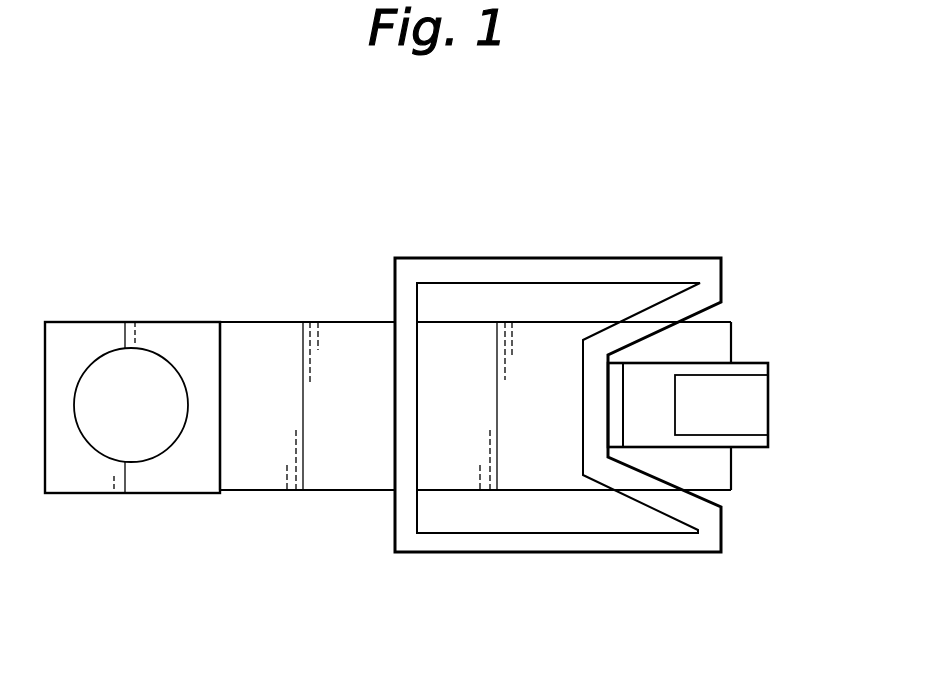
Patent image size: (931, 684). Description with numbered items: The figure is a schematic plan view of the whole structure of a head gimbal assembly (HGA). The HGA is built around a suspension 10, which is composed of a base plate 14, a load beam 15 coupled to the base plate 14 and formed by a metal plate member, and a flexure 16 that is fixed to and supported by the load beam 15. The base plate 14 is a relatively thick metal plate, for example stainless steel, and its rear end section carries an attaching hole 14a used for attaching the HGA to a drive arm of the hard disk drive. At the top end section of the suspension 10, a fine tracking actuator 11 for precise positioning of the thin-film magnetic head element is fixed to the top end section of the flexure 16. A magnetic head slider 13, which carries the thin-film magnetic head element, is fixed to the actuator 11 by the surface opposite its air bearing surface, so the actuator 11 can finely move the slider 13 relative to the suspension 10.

The suspension 10 is at (660, 189).
The fine tracking actuator 11 is at (657, 440).
The magnetic head slider 13 is at (753, 408).
The base plate 14 is at (173, 332).
The attaching hole 14a is at (77, 419).
The load beam 15 is at (283, 333).
The flexure 16 is at (558, 265).